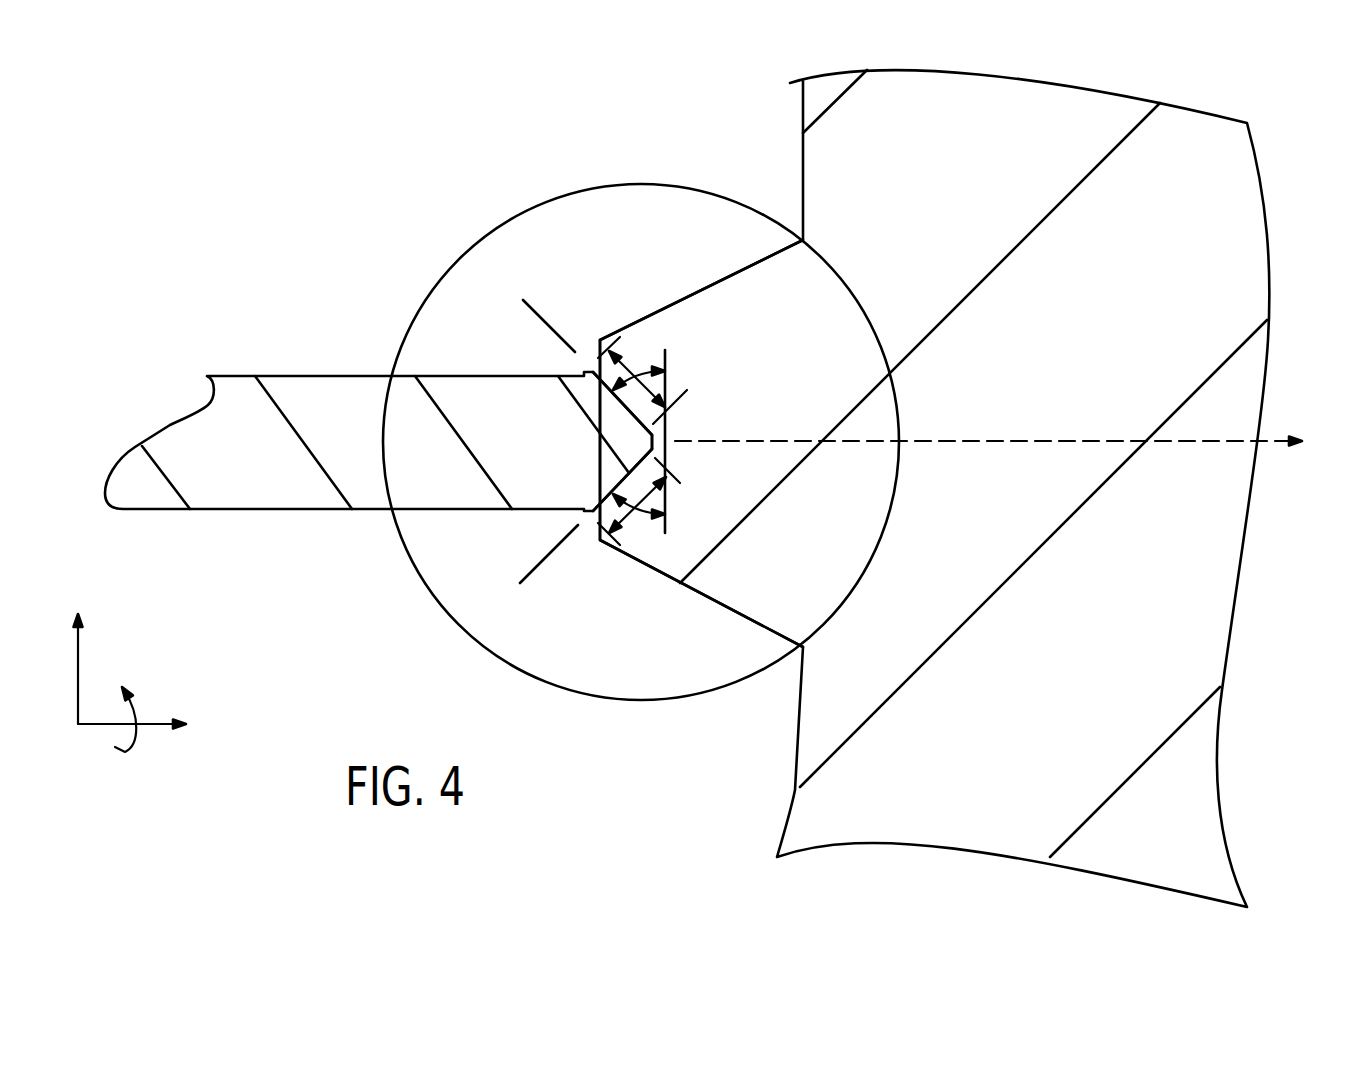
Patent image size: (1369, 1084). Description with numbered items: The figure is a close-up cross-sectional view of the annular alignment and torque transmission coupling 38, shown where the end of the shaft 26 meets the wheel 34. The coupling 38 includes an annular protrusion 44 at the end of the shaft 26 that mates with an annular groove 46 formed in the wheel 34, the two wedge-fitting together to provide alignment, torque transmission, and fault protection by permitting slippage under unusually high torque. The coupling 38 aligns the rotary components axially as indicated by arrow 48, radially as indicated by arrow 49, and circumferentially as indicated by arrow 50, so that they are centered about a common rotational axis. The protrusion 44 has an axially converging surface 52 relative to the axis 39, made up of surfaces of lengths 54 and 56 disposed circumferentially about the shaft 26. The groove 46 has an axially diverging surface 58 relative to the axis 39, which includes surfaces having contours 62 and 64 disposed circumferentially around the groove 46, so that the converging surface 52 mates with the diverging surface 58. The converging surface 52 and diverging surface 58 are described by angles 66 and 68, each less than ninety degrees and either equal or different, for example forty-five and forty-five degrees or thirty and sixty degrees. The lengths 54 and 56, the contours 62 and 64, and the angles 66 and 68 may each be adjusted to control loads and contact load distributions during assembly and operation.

The shaft 26 is at (298, 376).
The wheel 34 is at (1247, 263).
The coupling 38 is at (645, 185).
The axis 39 is at (1268, 450).
The protrusion 44 is at (588, 517).
The groove 46 is at (655, 437).
The arrow indicating axial direction 48 is at (151, 722).
The arrow indicating radial direction 49 is at (80, 652).
The arrow indicating circumferential direction 50 is at (132, 708).
The axially converging surface 52 is at (538, 316).
The length 54 is at (657, 385).
The length 56 is at (645, 497).
The axially diverging surface 58 is at (656, 494).
The contour 62 is at (702, 290).
The contour 64 is at (700, 591).
The angle 66 is at (624, 372).
The angle 68 is at (623, 511).